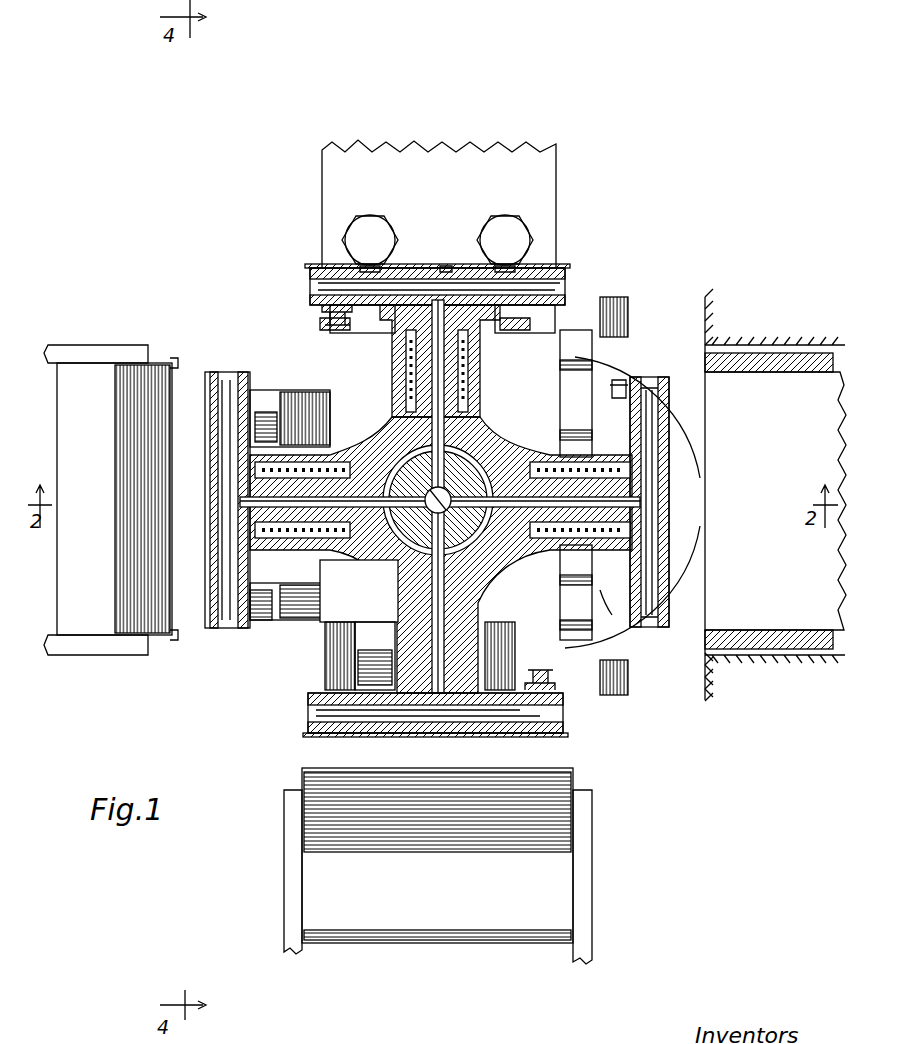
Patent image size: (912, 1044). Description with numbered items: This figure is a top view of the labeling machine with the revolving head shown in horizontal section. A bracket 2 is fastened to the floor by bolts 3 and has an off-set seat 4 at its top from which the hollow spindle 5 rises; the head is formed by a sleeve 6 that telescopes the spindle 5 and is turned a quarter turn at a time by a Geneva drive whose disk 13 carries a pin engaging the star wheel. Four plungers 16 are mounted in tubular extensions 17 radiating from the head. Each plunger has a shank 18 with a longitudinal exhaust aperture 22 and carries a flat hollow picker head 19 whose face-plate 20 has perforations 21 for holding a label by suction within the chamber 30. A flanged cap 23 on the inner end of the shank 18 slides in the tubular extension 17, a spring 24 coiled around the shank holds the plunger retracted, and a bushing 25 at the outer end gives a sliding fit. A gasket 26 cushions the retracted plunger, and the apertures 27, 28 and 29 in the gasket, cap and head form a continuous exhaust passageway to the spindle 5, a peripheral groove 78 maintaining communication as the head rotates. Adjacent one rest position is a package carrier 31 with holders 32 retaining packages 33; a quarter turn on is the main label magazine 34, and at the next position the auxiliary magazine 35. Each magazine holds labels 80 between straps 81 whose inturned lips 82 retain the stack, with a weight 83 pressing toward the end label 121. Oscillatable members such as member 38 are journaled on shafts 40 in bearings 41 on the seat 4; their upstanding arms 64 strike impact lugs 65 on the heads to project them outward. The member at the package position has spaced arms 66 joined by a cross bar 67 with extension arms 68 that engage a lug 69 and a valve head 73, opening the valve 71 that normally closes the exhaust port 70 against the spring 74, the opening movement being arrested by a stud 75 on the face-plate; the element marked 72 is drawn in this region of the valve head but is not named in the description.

The bracket 2 is at (322, 166).
The bolt 3 is at (375, 230).
The off-set seat 4 is at (296, 656).
The hollow spindle 5 is at (440, 496).
The sleeve 6 is at (505, 570).
The disk 13 is at (680, 640).
The plunger 16 is at (420, 280).
The tubular extension 17 is at (398, 372).
The shank 18 is at (470, 348).
The picker head 19 is at (578, 290).
The face-plate 20 is at (365, 262).
The perforations 21 is at (345, 268).
The exhaust aperture 22 is at (405, 352).
The flanged cap 23 is at (468, 400).
The spring 24 is at (470, 378).
The bushing 25 is at (490, 322).
The gasket 26 is at (490, 415).
The aperture 27 is at (410, 398).
The aperture 28 is at (400, 410).
The aperture 29 is at (444, 437).
The chamber 30 is at (575, 268).
The package carrier 31 is at (785, 345).
The holders 32 is at (772, 374).
The package 33 is at (775, 501).
The label magazine 34 is at (284, 898).
The auxiliary label magazine 35 is at (92, 345).
The oscillatable member 38 is at (375, 656).
The shaft 40 is at (605, 700).
The bearings 41 is at (312, 612).
The upstanding arms 64 is at (300, 400).
The impact lugs 65 is at (266, 410).
The arms 66 is at (610, 300).
The cross bar 67 is at (570, 444).
The extension arms 68 is at (576, 402).
The lug 69 is at (618, 605).
The exhaust port 70 is at (625, 380).
The valve 71 is at (650, 385).
The collar 72 is at (655, 408).
The valve head 73 is at (250, 630).
The spring 74 is at (640, 370).
The stud 75 is at (662, 378).
The groove 78 is at (359, 591).
The labels 80 is at (125, 597).
The straps 81 is at (85, 364).
The inturned lips 82 is at (185, 355).
The weight 83 is at (82, 428).
The end label 121 is at (378, 850).